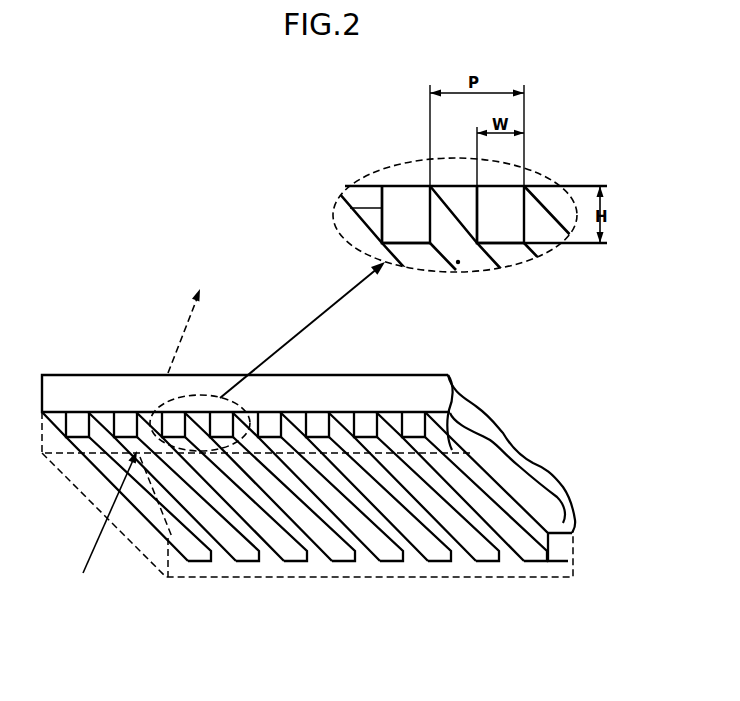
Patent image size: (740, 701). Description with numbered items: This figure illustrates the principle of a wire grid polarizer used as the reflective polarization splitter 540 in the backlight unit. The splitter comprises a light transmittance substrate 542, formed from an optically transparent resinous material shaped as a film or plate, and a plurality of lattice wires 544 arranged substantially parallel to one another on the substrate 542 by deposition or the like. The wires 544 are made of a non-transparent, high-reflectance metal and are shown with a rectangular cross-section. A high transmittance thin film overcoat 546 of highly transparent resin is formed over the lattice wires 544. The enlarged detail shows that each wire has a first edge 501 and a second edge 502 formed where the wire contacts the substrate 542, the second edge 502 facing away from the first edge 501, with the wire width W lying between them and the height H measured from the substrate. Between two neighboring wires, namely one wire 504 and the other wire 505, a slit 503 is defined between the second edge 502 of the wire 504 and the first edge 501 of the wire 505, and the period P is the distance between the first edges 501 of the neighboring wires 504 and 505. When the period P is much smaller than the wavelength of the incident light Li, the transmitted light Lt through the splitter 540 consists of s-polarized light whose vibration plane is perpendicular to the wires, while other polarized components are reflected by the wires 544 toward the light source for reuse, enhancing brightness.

The first edge 501 is at (340, 194).
The second edge 502 is at (527, 217).
The slit 503 is at (463, 200).
The wire 504 is at (398, 222).
The wire 505 is at (510, 205).
The reflective polarization splitter 540 is at (351, 668).
The substrate 542 is at (562, 505).
The wires 544 is at (532, 557).
The overcoat 546 is at (88, 478).